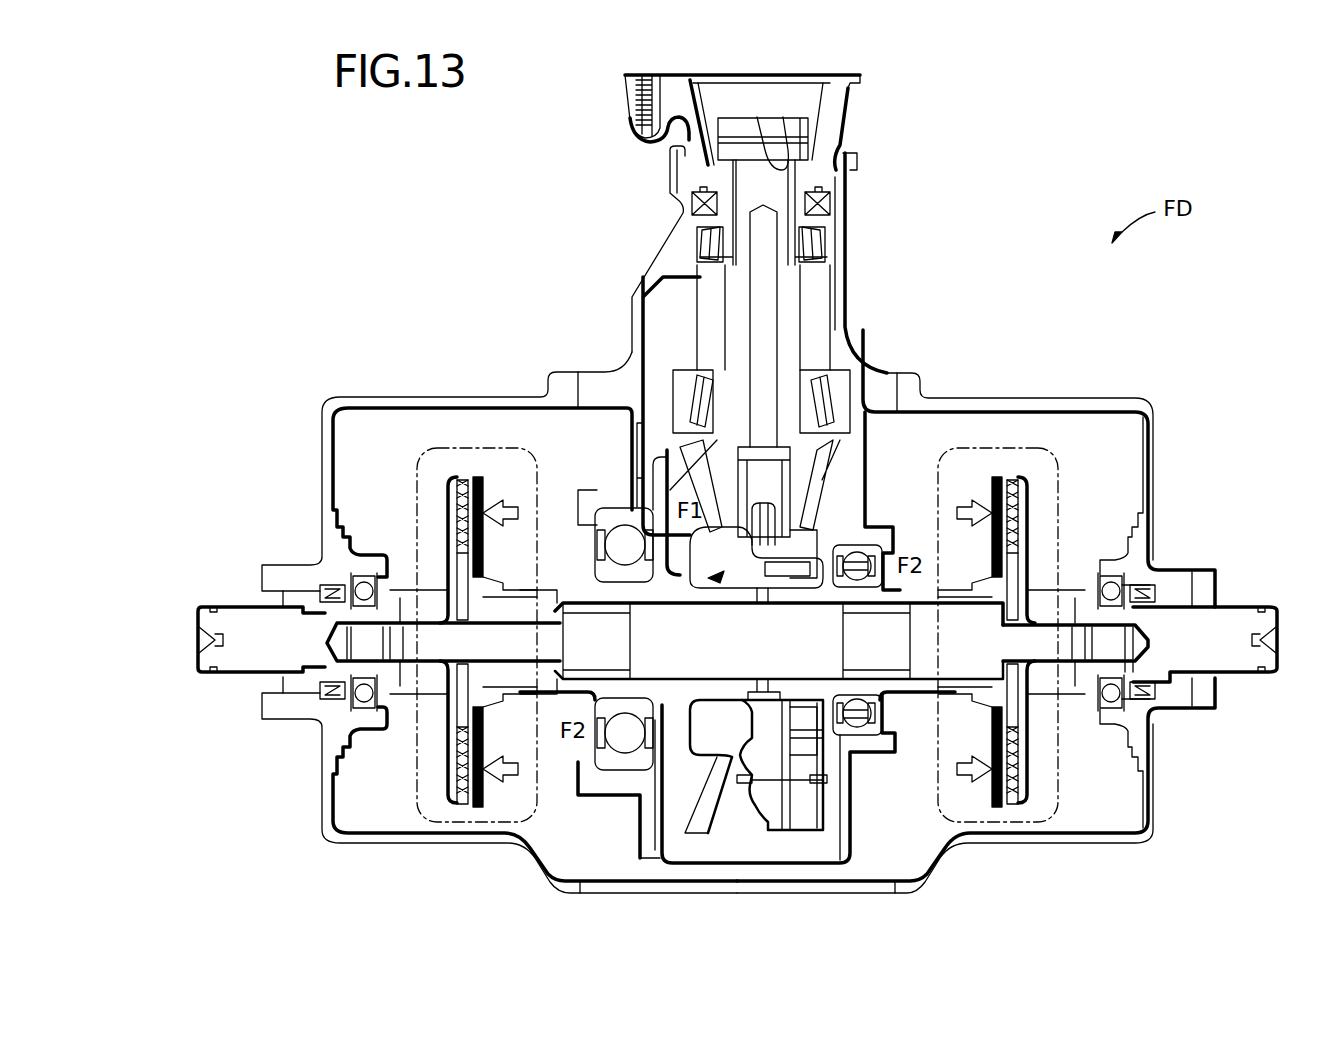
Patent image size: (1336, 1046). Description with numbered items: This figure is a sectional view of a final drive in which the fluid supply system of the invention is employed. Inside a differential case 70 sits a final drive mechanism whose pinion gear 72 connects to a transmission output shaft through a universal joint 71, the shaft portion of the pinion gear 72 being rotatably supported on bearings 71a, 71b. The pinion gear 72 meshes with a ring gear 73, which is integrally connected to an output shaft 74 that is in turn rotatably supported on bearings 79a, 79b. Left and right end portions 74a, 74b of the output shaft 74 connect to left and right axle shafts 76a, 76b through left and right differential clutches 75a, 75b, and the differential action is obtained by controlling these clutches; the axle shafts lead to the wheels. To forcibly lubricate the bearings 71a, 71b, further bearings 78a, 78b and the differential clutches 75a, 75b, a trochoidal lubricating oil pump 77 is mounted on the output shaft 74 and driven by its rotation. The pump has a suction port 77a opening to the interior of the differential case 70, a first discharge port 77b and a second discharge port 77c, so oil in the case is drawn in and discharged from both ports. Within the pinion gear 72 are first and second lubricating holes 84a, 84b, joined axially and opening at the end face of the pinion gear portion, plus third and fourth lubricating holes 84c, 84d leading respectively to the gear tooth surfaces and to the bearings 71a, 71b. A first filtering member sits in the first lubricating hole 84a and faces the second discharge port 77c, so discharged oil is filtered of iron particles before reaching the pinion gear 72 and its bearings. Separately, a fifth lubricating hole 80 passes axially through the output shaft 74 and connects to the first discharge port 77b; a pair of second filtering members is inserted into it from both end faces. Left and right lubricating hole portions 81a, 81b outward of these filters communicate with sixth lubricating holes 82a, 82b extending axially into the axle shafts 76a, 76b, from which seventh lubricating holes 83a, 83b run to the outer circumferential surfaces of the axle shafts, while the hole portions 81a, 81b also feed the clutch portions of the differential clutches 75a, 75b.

The differential case 70 is at (440, 397).
The universal joint 71 is at (633, 110).
The bearing 71a is at (832, 250).
The bearing 71b is at (845, 385).
The pinion gear 72 is at (822, 502).
The ring gear 73 is at (675, 830).
The output shaft 74 is at (714, 702).
The left end portion 74a is at (557, 600).
The right end portion 74b is at (922, 700).
The left differential clutch 75a is at (520, 452).
The right differential clutch 75b is at (1035, 452).
The left axle shaft 76a is at (238, 675).
The right axle shaft 76b is at (1238, 675).
The lubricating oil pump 77 is at (708, 578).
The suction port 77a is at (798, 818).
The first discharge port 77b is at (768, 679).
The second discharge port 77c is at (772, 520).
The bearing 78a is at (366, 574).
The bearing 78b is at (1108, 574).
The bearing 79a is at (622, 540).
The bearing 79b is at (858, 556).
The fifth lubricating hole 80 is at (694, 657).
The left lubricating hole portion 81a is at (484, 657).
The right lubricating hole portion 81b is at (946, 657).
The sixth lubricating hole 82a is at (400, 667).
The sixth lubricating hole 82b is at (1075, 667).
The seventh lubricating hole 83a is at (345, 660).
The seventh lubricating hole 83b is at (1130, 660).
The first lubricating hole 84a is at (880, 392).
The second lubricating hole 84b is at (765, 312).
The third lubricating hole 84c is at (700, 405).
The fourth lubricating hole 84d is at (735, 350).